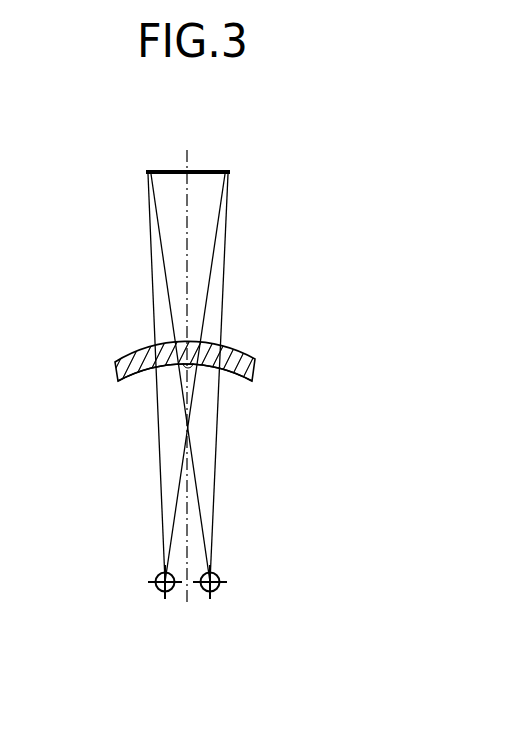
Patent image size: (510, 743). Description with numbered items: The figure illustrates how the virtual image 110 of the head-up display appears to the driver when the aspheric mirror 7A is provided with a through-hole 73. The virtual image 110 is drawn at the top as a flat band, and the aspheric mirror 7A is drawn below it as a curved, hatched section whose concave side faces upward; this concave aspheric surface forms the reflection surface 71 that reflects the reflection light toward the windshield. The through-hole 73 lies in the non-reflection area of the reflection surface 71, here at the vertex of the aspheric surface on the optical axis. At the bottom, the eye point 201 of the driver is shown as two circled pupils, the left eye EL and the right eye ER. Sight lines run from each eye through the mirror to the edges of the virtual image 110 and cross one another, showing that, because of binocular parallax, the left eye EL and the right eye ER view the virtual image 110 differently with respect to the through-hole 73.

The virtual image 110 is at (158, 171).
The aspheric mirror 7A is at (233, 350).
The reflection surface 71 is at (235, 379).
The through-hole 73 is at (188, 366).
The eye point 201 is at (160, 573).
The left eye EL is at (160, 594).
The right eye ER is at (215, 594).